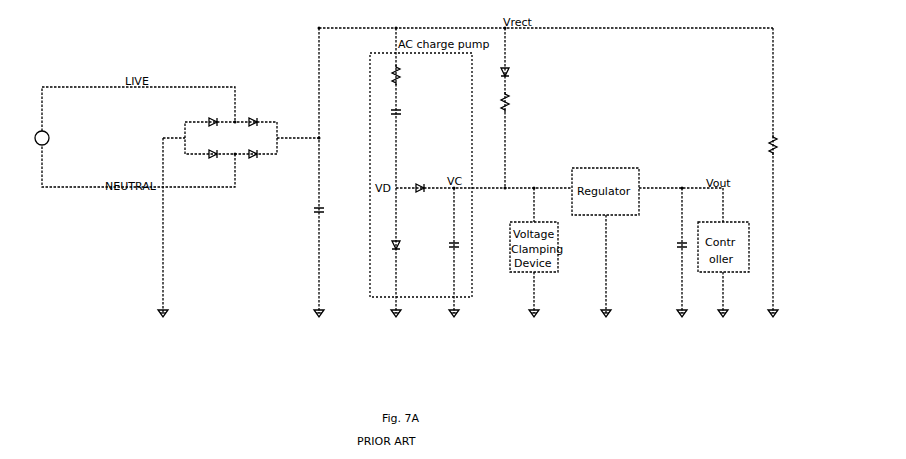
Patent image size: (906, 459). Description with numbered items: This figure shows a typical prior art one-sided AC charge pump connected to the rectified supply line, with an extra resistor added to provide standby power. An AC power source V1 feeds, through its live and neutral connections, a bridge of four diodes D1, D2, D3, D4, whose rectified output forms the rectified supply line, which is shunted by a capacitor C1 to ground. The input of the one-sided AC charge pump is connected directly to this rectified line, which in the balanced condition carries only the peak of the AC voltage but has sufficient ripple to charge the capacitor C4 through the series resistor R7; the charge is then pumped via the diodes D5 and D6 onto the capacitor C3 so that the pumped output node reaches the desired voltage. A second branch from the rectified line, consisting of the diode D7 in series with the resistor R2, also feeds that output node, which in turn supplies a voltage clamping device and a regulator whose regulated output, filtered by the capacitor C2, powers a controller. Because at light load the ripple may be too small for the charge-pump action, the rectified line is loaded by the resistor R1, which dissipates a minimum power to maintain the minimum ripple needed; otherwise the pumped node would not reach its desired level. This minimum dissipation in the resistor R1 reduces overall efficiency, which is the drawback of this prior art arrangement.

The AC power source V1 is at (57, 145).
The bridge rectifier diode D1 is at (212, 116).
The bridge rectifier diode D2 is at (248, 116).
The bridge rectifier diode D3 is at (212, 149).
The bridge rectifier diode D4 is at (248, 149).
The rectifier filter capacitor C1 is at (325, 209).
The charge pump resistor R7 is at (388, 75).
The capacitor C4 is at (389, 106).
The diode D7 is at (512, 66).
The resistor R2 is at (497, 102).
The charge pump diode D5 is at (419, 182).
The charge pump diode D6 is at (389, 243).
The capacitor C3 is at (459, 245).
The output capacitor C2 is at (687, 244).
The resistor R1 is at (765, 145).